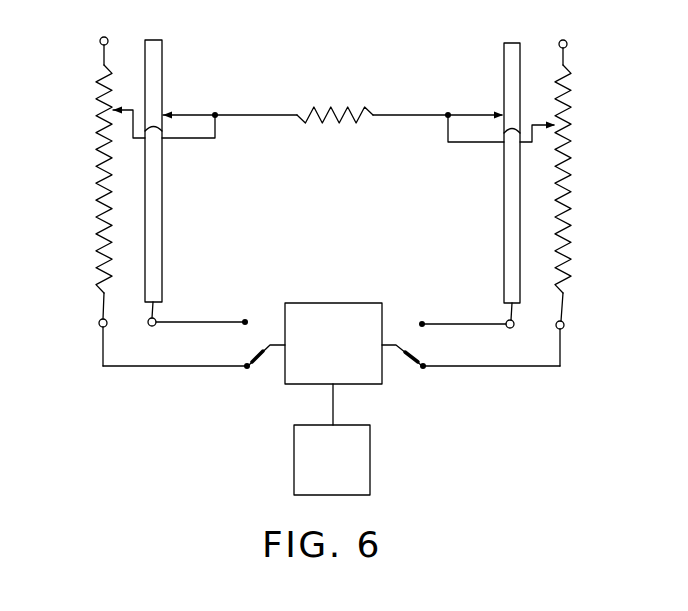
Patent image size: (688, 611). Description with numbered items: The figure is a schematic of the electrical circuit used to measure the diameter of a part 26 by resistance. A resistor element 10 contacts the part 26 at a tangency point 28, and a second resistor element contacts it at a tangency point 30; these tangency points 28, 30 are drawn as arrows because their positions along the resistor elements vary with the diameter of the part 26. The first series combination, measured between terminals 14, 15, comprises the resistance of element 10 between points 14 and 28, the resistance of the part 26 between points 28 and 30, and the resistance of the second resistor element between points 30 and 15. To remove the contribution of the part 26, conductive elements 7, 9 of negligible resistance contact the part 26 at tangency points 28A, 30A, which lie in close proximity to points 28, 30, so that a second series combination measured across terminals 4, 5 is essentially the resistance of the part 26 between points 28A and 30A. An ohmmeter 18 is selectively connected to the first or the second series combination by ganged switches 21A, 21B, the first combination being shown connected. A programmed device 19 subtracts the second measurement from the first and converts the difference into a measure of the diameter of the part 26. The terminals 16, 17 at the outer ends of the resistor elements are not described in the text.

The terminal 4 is at (156, 318).
The terminal 5 is at (507, 321).
The conductive element 7 is at (162, 195).
The conductive element 9 is at (504, 257).
The resistor element 10 is at (96, 183).
The terminal 14 is at (99, 323).
The terminal 15 is at (565, 325).
The terminal 16 is at (100, 41).
The terminal 17 is at (567, 42).
The ohmmeter 18 is at (316, 303).
The programmed device 19 is at (370, 468).
The switch 21A is at (262, 352).
The switch 21B is at (413, 354).
The part 26 is at (333, 107).
The tangency point 28 is at (115, 108).
The tangency point 28A is at (166, 112).
The tangency point 30 is at (548, 124).
The tangency point 30A is at (499, 112).